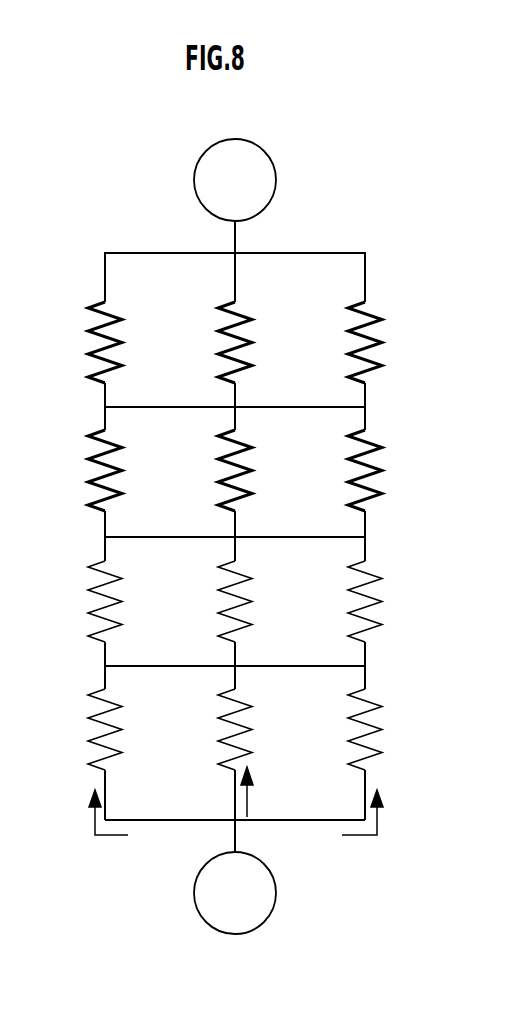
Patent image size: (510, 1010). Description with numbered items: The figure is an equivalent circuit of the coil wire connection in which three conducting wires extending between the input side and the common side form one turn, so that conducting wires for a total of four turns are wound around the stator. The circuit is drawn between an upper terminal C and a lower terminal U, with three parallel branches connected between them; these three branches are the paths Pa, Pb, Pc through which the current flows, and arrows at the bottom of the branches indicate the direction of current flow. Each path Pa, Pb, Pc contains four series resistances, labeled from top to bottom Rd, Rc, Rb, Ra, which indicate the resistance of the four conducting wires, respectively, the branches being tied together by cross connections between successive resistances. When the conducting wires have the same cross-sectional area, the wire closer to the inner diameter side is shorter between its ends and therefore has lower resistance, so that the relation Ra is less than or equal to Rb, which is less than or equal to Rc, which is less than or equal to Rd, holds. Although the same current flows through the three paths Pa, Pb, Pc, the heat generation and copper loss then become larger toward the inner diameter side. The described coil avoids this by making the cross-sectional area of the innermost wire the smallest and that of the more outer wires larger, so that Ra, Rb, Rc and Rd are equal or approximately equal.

The current source / common terminal C is at (235, 180).
The voltage source U is at (235, 893).
The path Pa is at (112, 240).
The path Pb is at (227, 236).
The path Pc is at (361, 240).
The resistance of conducting wire Rd is at (215, 342).
The resistance of conducting wire Rc is at (215, 470).
The resistance of conducting wire Rb is at (215, 601).
The resistance of conducting wire Ra is at (215, 729).